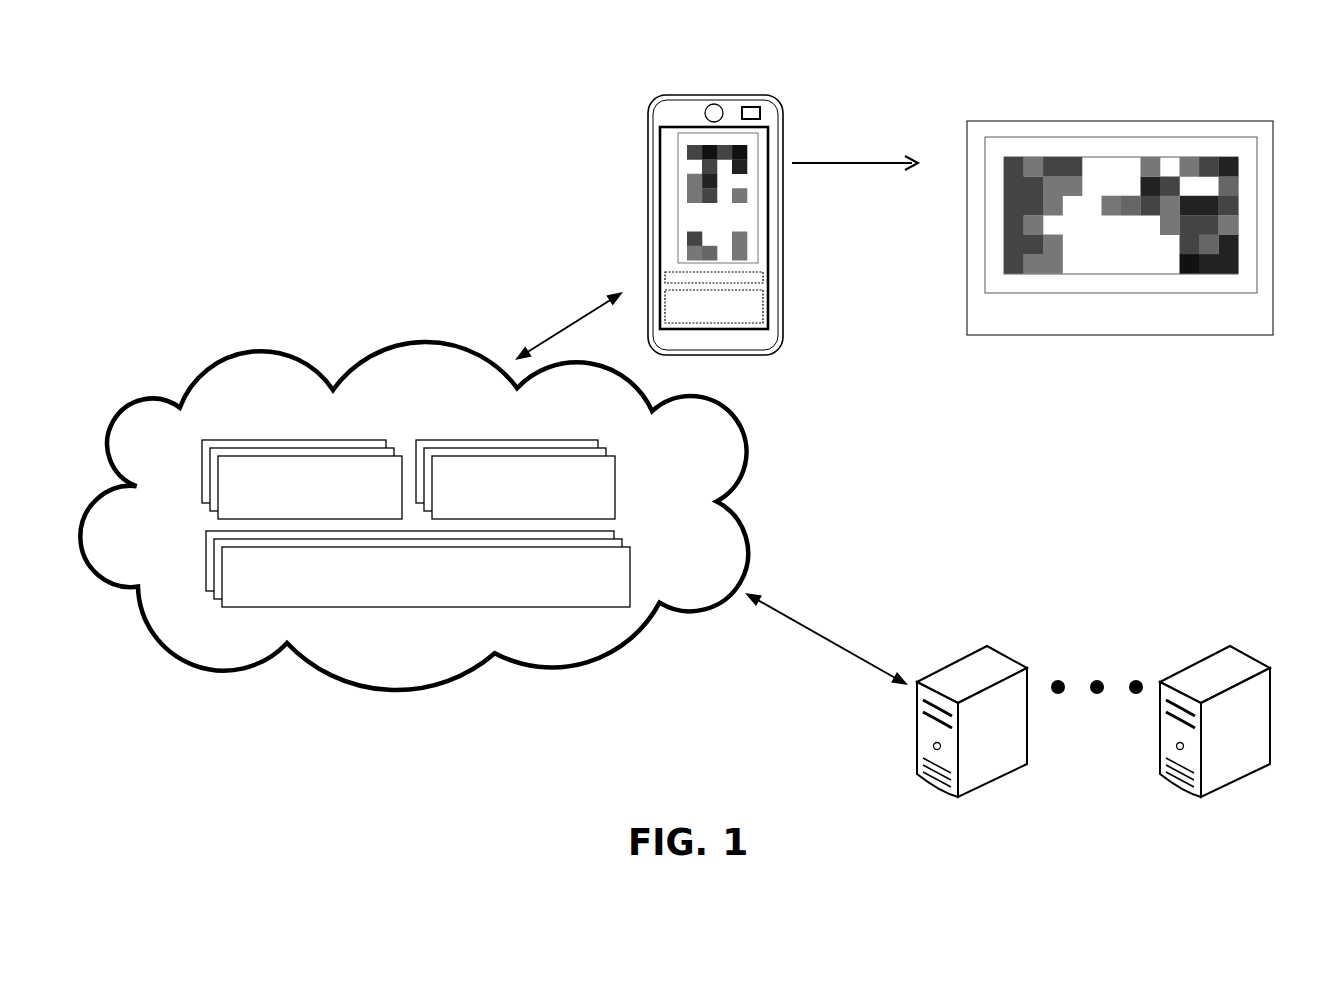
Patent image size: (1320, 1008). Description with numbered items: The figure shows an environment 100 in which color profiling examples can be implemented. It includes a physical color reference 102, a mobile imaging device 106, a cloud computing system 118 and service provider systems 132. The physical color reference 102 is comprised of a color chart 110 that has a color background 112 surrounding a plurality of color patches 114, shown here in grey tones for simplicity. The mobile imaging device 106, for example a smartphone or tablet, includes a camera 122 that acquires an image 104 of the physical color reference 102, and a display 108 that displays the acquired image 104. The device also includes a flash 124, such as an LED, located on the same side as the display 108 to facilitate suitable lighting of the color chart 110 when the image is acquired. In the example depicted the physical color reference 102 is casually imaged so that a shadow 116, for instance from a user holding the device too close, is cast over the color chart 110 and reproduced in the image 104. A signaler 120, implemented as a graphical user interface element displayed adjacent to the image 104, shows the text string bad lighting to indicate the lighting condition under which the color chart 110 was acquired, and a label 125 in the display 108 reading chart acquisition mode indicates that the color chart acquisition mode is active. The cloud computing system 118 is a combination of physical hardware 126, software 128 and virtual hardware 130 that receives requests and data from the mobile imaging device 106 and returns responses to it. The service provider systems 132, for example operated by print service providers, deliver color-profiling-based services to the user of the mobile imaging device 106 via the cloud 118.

The environment 100 is at (186, 68).
The physical color reference 102 is at (1139, 254).
The image 104 is at (651, 134).
The mobile imaging device 106 is at (770, 348).
The display 108 is at (774, 238).
The color chart 110 is at (1218, 292).
The color background 112 is at (1243, 273).
The color patches 114 is at (1226, 224).
The shadow 116 is at (1040, 322).
The cloud computing system 118 is at (648, 631).
The signaler 120 is at (757, 306).
The camera 122 is at (715, 103).
The flash 124 is at (762, 109).
The label 125 is at (664, 277).
The physical hardware 126 is at (632, 588).
The software 128 is at (616, 478).
The virtual hardware 130 is at (260, 440).
The service provider systems 132 is at (972, 657).